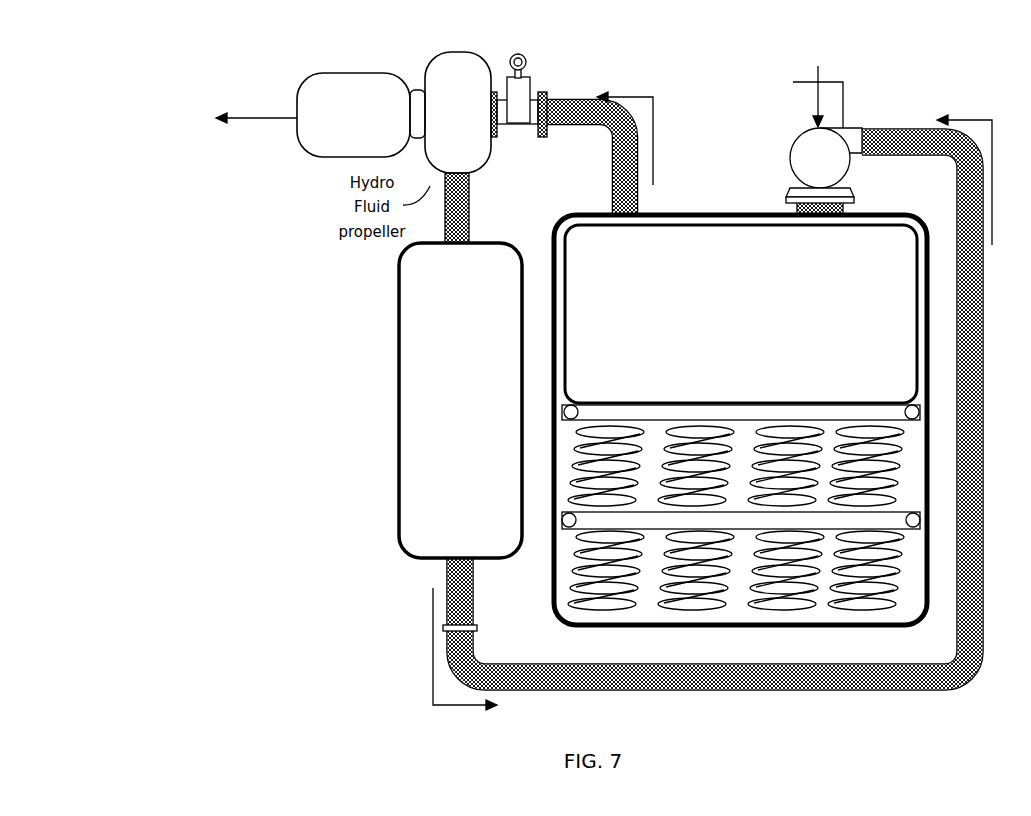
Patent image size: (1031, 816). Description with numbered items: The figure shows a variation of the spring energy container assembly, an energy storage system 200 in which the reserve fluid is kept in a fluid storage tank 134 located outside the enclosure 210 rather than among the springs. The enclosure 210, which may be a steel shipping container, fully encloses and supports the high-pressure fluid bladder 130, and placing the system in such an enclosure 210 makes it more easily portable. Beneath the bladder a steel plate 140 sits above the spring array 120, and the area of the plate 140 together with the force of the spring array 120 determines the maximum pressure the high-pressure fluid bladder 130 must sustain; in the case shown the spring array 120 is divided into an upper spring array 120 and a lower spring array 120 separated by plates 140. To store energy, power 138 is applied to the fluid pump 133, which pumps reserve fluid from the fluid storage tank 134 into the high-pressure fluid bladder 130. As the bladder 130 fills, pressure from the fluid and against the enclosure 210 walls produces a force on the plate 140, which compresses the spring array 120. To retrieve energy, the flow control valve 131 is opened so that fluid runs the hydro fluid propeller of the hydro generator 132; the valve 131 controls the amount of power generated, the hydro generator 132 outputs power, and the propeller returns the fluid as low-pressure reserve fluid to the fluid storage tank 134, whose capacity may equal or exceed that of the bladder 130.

The energy storage system 200 is at (203, 257).
The hydro generator 132 is at (318, 160).
The flow control valve 131 is at (537, 84).
The power 138 is at (883, 40).
The fluid pump 133 is at (785, 158).
The enclosure 210 is at (542, 256).
The high-pressure fluid bladder 130 is at (741, 314).
The steel plate 140 is at (601, 392).
The spring array 120 is at (835, 436).
The fluid storage tank 134 is at (460, 400).